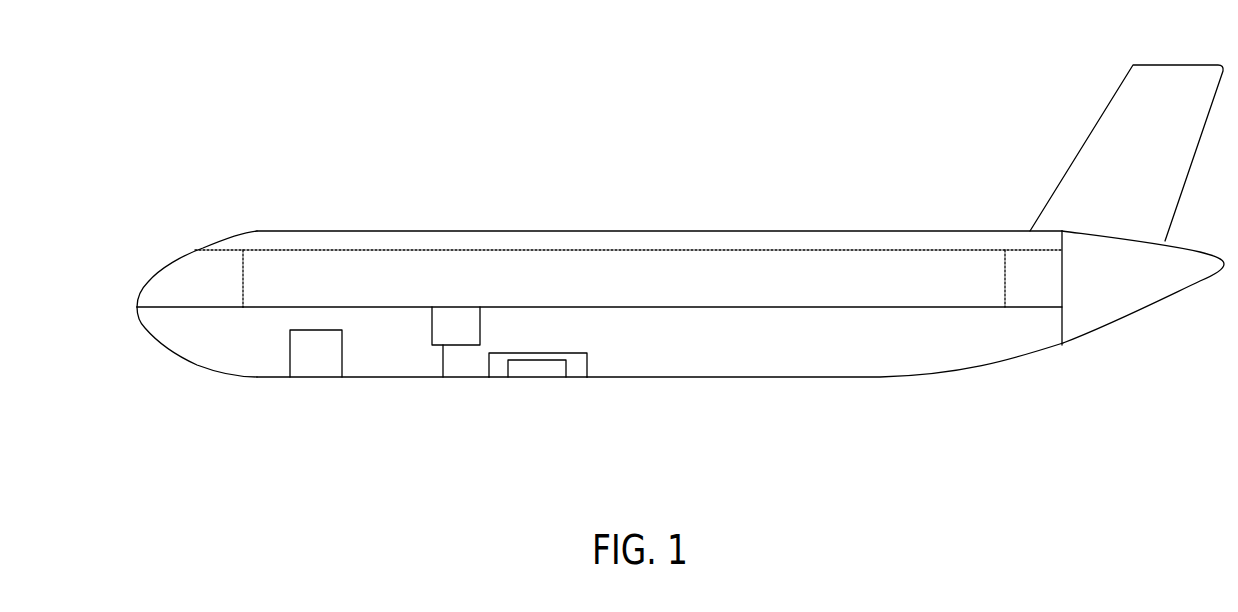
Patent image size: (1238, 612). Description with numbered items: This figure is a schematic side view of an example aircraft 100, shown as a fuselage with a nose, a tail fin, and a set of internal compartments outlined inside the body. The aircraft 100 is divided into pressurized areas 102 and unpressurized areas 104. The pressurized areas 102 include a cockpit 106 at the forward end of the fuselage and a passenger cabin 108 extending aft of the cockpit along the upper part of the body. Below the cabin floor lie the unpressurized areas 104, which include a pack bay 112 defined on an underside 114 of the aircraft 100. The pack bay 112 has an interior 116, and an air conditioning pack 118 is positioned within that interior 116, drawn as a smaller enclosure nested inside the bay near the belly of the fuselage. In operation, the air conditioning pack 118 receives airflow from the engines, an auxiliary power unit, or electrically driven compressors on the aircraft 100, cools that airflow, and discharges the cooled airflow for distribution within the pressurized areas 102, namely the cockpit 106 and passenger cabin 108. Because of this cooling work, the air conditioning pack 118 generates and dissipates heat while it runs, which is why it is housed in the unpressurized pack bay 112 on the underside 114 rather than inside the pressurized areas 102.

The aircraft 100 is at (620, 168).
The pressurized areas 102 is at (135, 277).
The unpressurized areas 104 is at (157, 362).
The cockpit 106 is at (197, 288).
The passenger cabin 108 is at (668, 285).
The pack bay 112 is at (487, 367).
The underside 114 is at (692, 393).
The interior 116 is at (500, 363).
The air conditioning pack 118 is at (498, 377).